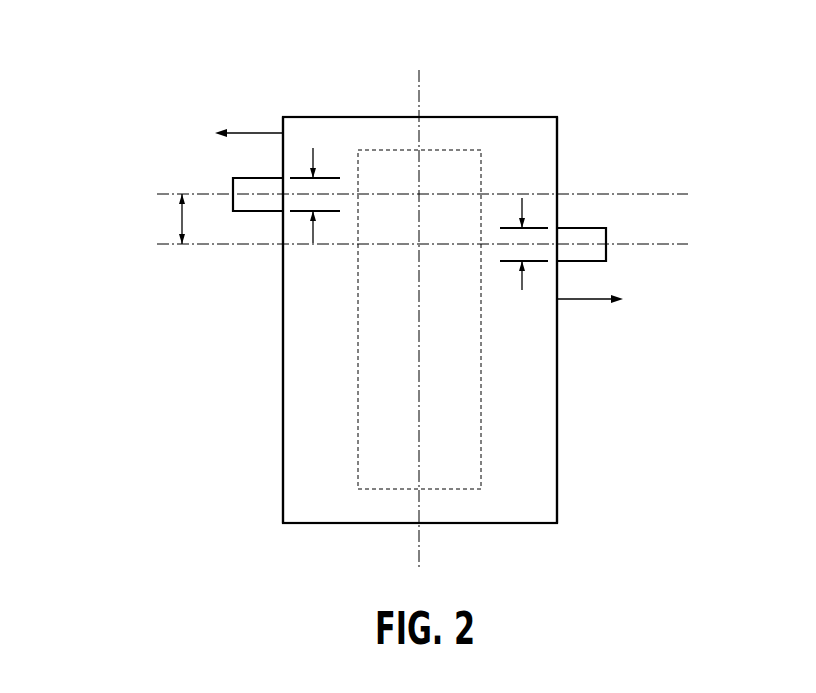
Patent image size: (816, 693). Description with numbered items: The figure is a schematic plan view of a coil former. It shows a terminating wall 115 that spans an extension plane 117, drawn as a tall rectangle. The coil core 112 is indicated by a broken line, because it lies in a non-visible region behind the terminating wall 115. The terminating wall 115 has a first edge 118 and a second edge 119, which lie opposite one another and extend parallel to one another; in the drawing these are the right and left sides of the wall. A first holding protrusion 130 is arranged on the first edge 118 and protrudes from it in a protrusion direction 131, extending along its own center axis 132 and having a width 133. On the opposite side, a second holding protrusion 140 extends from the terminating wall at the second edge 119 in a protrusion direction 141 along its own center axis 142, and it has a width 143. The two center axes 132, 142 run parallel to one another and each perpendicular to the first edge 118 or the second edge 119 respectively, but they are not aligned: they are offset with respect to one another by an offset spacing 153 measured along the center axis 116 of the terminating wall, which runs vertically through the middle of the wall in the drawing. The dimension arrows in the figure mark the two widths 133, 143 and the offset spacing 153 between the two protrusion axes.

The coil core 112 is at (481, 414).
The terminating wall 115 is at (486, 320).
The extension plane 117 is at (557, 128).
The center axis of the terminating wall 116 is at (419, 553).
The first edge 118 is at (557, 503).
The second edge 119 is at (283, 470).
The first holding protrusion 130 is at (606, 238).
The protrusion direction of the first holding protrusion 131 is at (583, 299).
The center axis of the first holding protrusion 132 is at (646, 247).
The width of the first holding protrusion 133 is at (522, 208).
The second holding protrusion 140 is at (232, 184).
The protrusion direction of the second holding protrusion 141 is at (248, 132).
The center axis of the second holding protrusion 142 is at (170, 193).
The width of the second holding protrusion 143 is at (313, 231).
The offset spacing 153 is at (178, 224).